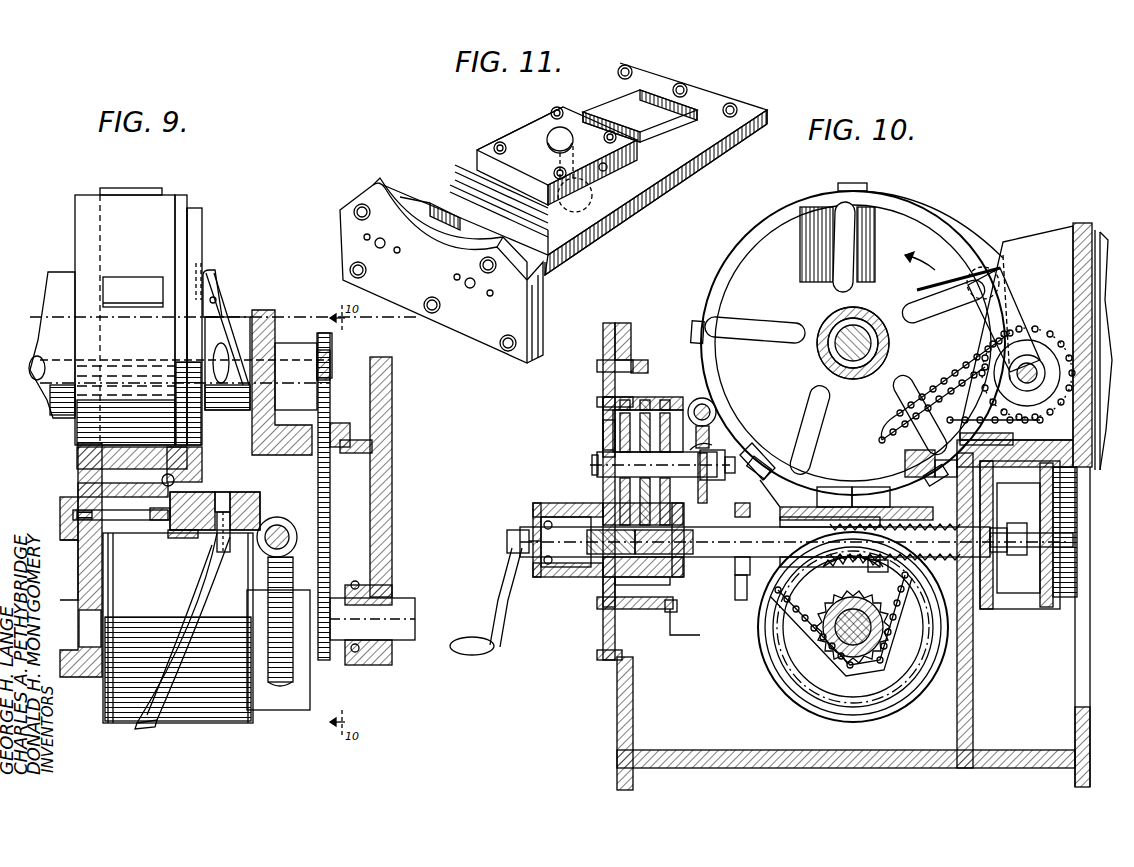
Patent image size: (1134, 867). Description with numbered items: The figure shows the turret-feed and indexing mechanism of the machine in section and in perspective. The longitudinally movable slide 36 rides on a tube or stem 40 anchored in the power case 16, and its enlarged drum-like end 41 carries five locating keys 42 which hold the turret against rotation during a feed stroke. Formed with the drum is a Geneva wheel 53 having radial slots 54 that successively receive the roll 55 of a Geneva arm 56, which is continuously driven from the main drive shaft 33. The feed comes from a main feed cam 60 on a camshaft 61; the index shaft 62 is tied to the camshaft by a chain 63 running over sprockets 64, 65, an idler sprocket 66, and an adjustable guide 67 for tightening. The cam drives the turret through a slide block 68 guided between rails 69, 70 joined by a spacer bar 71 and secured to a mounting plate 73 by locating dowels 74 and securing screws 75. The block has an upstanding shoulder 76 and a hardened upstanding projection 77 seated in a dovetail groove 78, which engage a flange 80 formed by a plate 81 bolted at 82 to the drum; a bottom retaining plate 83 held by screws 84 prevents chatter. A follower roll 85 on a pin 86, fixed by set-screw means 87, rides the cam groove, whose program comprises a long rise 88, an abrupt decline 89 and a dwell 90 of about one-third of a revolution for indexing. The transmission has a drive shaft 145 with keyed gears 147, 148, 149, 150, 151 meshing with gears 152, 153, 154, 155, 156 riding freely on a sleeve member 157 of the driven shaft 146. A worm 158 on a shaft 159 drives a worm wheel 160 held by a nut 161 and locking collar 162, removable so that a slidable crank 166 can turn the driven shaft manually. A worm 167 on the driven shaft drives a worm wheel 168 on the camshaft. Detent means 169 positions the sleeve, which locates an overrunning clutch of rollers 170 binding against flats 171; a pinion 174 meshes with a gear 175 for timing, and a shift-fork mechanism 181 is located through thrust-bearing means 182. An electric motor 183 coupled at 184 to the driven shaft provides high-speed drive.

In FIG. 9, the power case 16 is at (392, 493).
In FIG. 10, the power case 16 is at (617, 703).
In FIG. 10, the main longitudinal drive shaft 33 is at (870, 328).
In FIG. 9, the longitudinally movable slide 36 is at (60, 280).
In FIG. 9, the tube or stem 40 is at (46, 378).
In FIG. 10, the tube or stem 40 is at (858, 312).
In FIG. 9, the drum-like end 41 is at (163, 207).
In FIG. 10, the drum-like end 41 is at (905, 196).
In FIG. 9, the locating bar or key 42 is at (112, 194).
In FIG. 10, the locating bar or key 42 is at (853, 183).
In FIG. 9, the Geneva wheel 53 is at (200, 218).
In FIG. 10, the Geneva wheel 53 is at (787, 230).
In FIG. 10, the radial slot 54 is at (833, 265).
In FIG. 9, the roll 55 is at (203, 265).
In FIG. 10, the roll 55 is at (1000, 262).
In FIG. 9, the Geneva arm 56 is at (220, 312).
In FIG. 10, the Geneva arm 56 is at (1018, 312).
In FIG. 9, the main feed cam 60 is at (225, 720).
In FIG. 10, the main feed cam 60 is at (790, 707).
In FIG. 9, the camshaft 61 is at (400, 606).
In FIG. 10, the camshaft 61 is at (836, 652).
In FIG. 9, the index shaft 62 is at (332, 368).
In FIG. 10, the index shaft 62 is at (1030, 370).
In FIG. 9, the chain 63 is at (331, 501).
In FIG. 10, the chain 63 is at (890, 418).
In FIG. 9, the sprocket 64 is at (345, 622).
In FIG. 10, the sprocket 64 is at (862, 658).
In FIG. 9, the sprocket 65 is at (320, 342).
In FIG. 10, the sprocket 65 is at (1035, 418).
In FIG. 10, the idler sprocket 66 is at (853, 568).
In FIG. 9, the adjustable slide or guide 67 is at (342, 428).
In FIG. 10, the adjustable slide or guide 67 is at (940, 477).
In FIG. 9, the slide block 68 is at (160, 530).
In FIG. 11, the slide block 68 is at (515, 138).
In FIG. 10, the slide block 68 is at (835, 487).
In FIG. 9, the rail 69 is at (120, 522).
In FIG. 11, the rail 69 is at (450, 215).
In FIG. 11, the rail 70 is at (655, 138).
In FIG. 9, the spacer bar 71 is at (265, 502).
In FIG. 11, the spacer bar 71 is at (712, 98).
In FIG. 10, the spacer bar 71 is at (868, 487).
In FIG. 9, the mounting plate 73 is at (60, 534).
In FIG. 11, the mounting plate 73 is at (458, 322).
In FIG. 11, the locating dowel 74 is at (375, 248).
In FIG. 9, the securing screw 75 is at (60, 500).
In FIG. 11, the securing screw 75 is at (395, 243).
In FIG. 11, the upstanding shoulder 76 is at (515, 178).
In FIG. 9, the upstanding projection 77 is at (155, 483).
In FIG. 11, the upstanding projection 77 is at (510, 200).
In FIG. 11, the transverse groove 78 is at (548, 225).
In FIG. 9, the flange or lip 80 is at (210, 490).
In FIG. 10, the flange or lip 80 is at (958, 232).
In FIG. 9, the plate 81 is at (200, 447).
In FIG. 9, the bolting 82 is at (165, 475).
In FIG. 9, the bottom retaining plate 83 is at (192, 532).
In FIG. 11, the bottom retaining plate 83 is at (473, 225).
In FIG. 11, the screw 84 is at (565, 110).
In FIG. 9, the follower roll 85 is at (224, 552).
In FIG. 11, the follower roll 85 is at (585, 204).
In FIG. 10, the follower roll 85 is at (877, 573).
In FIG. 9, the dowel or pin 86 is at (222, 495).
In FIG. 11, the dowel or pin 86 is at (573, 135).
In FIG. 11, the set-screw means 87 is at (607, 168).
In FIG. 9, the rise 88 is at (185, 596).
In FIG. 9, the decline 89 is at (138, 724).
In FIG. 9, the dwell 90 is at (220, 658).
In FIG. 10, the drive shaft 145 is at (597, 466).
In FIG. 9, the driven shaft 146 is at (300, 538).
In FIG. 10, the driven shaft 146 is at (600, 500).
In FIG. 10, the gear 147 is at (603, 414).
In FIG. 10, the gear 148 is at (603, 430).
In FIG. 10, the gear 149 is at (626, 405).
In FIG. 10, the gear 150 is at (648, 407).
In FIG. 10, the gear 151 is at (668, 405).
In FIG. 10, the gear 152 is at (606, 586).
In FIG. 10, the gear 153 is at (642, 585).
In FIG. 10, the gear 154 is at (640, 609).
In FIG. 10, the gear 155 is at (621, 641).
In FIG. 10, the gear 156 is at (667, 626).
In FIG. 10, the sleeve member 157 is at (738, 512).
In FIG. 10, the worm 158 is at (715, 406).
In FIG. 10, the shaft 159 is at (709, 427).
In FIG. 10, the worm wheel 160 is at (707, 440).
In FIG. 10, the nut 161 is at (757, 462).
In FIG. 10, the locking collar 162 is at (738, 452).
In FIG. 10, the slidable handle or crank 166 is at (503, 578).
In FIG. 9, the worm 167 is at (295, 560).
In FIG. 10, the worm 167 is at (905, 482).
In FIG. 9, the worm wheel 168 is at (285, 686).
In FIG. 10, the worm wheel 168 is at (910, 545).
In FIG. 10, the detent means 169 is at (690, 545).
In FIG. 10, the roller element 170 is at (664, 542).
In FIG. 10, the flat 171 is at (611, 542).
In FIG. 10, the pinion 174 is at (742, 584).
In FIG. 10, the gear 175 is at (775, 672).
In FIG. 10, the shift-fork mechanism 181 is at (735, 585).
In FIG. 10, the thrust-bearing means 182 is at (782, 512).
In FIG. 10, the electric motor 183 is at (1092, 595).
In FIG. 10, the coupling 184 is at (1000, 548).